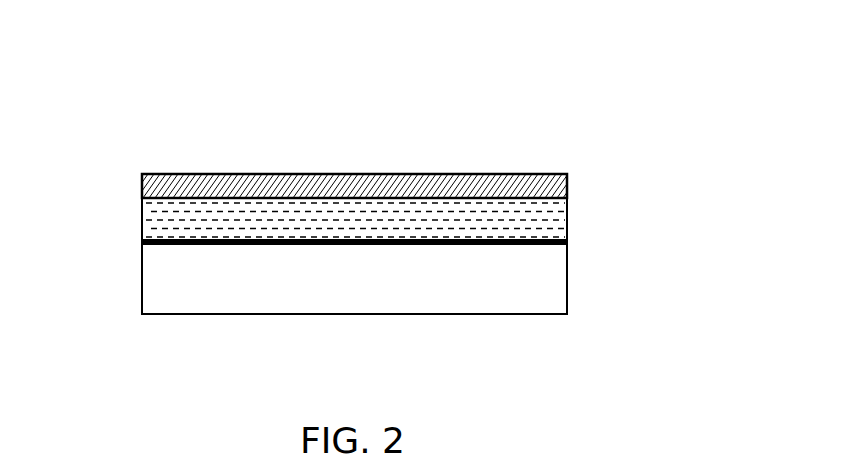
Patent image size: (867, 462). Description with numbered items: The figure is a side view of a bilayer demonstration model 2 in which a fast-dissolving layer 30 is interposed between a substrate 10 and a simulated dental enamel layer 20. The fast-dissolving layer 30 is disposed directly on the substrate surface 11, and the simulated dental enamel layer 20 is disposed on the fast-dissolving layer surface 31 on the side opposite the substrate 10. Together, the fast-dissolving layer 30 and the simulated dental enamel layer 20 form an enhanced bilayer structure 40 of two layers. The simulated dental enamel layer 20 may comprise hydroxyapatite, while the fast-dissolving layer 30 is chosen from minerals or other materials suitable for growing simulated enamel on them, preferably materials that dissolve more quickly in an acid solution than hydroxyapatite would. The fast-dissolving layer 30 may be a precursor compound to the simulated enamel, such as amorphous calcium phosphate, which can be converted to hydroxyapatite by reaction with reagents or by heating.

The bilayer demonstration model 2 is at (500, 142).
The substrate 10 is at (567, 292).
The substrate surface 11 is at (142, 242).
The simulated dental enamel layer 20 is at (567, 183).
The fast-dissolving layer 30 is at (567, 222).
The fast-dissolving layer surface 31 is at (142, 199).
The enhanced bilayer structure 40 is at (665, 150).